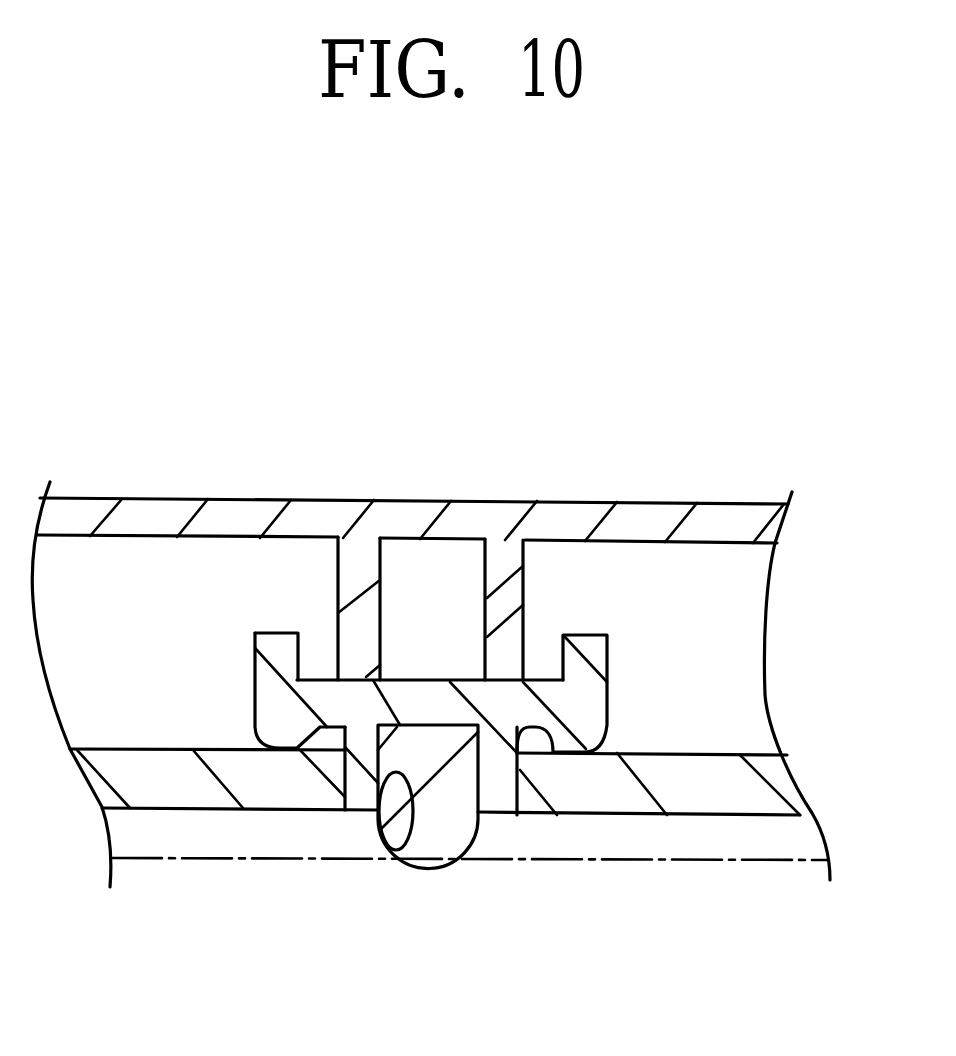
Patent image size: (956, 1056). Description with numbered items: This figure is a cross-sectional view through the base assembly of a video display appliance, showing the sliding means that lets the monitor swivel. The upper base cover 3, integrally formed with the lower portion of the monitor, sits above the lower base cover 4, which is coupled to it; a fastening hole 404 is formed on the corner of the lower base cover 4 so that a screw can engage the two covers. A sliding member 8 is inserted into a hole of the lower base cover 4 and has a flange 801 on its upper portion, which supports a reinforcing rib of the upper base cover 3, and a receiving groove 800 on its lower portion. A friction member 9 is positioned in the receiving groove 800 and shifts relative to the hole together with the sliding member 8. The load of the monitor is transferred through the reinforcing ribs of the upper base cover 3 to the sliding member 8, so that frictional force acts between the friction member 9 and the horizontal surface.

The upper base cover 3 is at (468, 525).
The lower base cover 4 is at (750, 795).
The sliding member 8 is at (587, 702).
The friction member 9 is at (447, 817).
The fastening hole 404 is at (507, 588).
The receiving groove 800 is at (403, 847).
The flange 801 is at (282, 633).